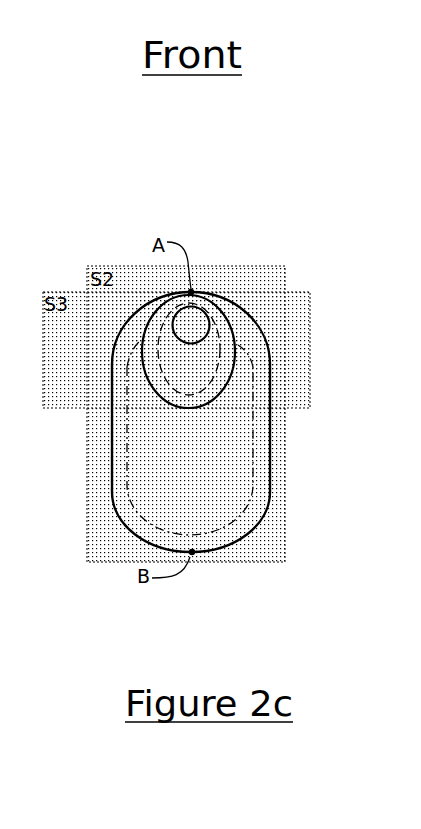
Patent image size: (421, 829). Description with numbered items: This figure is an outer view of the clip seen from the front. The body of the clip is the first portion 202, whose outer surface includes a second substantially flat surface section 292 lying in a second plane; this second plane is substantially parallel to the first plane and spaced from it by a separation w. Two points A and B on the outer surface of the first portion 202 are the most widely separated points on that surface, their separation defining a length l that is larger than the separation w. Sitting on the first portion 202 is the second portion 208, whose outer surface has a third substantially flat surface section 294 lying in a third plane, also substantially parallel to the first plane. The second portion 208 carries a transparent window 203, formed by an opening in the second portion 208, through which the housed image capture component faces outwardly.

The first portion 202 is at (270, 417).
The transparent window 203 is at (192, 323).
The second portion 208 is at (236, 312).
The second substantially flat surface section 292 is at (250, 495).
The third substantially flat surface section 294 is at (222, 348).